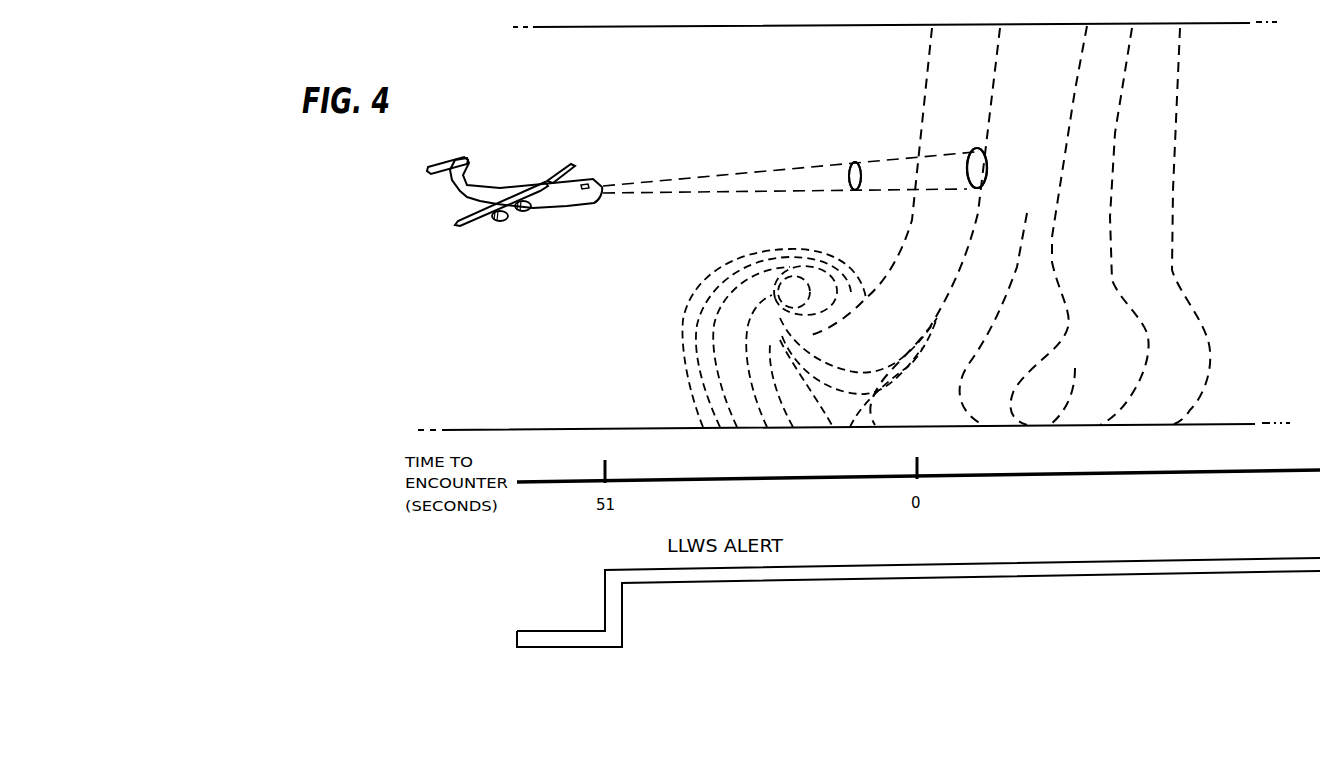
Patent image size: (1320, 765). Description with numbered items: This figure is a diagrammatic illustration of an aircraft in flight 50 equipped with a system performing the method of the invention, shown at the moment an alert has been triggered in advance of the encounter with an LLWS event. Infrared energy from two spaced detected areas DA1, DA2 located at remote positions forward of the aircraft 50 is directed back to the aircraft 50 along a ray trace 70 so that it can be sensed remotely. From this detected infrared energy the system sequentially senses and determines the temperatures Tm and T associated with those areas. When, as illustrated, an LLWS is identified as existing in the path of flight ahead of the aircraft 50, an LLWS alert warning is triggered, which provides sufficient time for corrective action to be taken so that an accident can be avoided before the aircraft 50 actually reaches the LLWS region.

The aircraft in flight 50 is at (597, 208).
The ray trace 70 is at (790, 176).
The temperature T is at (968, 160).
The temperature Tm is at (855, 162).
The first detected area DA1 is at (855, 190).
The second detected area DA2 is at (968, 188).
The low level wind shear LLWS is at (1150, 230).